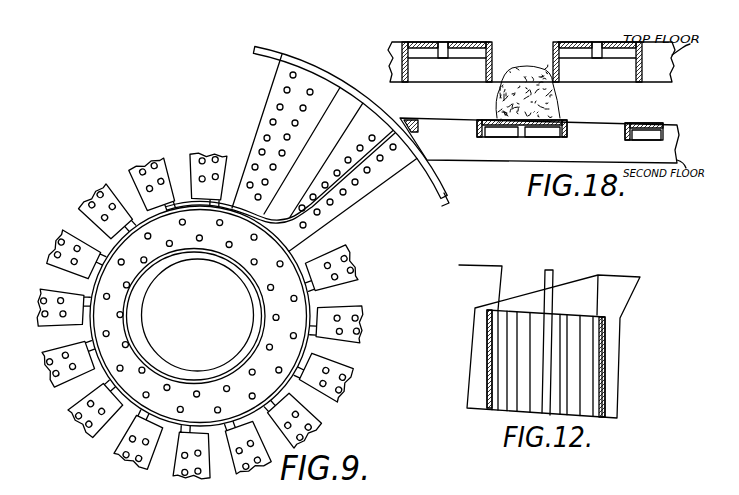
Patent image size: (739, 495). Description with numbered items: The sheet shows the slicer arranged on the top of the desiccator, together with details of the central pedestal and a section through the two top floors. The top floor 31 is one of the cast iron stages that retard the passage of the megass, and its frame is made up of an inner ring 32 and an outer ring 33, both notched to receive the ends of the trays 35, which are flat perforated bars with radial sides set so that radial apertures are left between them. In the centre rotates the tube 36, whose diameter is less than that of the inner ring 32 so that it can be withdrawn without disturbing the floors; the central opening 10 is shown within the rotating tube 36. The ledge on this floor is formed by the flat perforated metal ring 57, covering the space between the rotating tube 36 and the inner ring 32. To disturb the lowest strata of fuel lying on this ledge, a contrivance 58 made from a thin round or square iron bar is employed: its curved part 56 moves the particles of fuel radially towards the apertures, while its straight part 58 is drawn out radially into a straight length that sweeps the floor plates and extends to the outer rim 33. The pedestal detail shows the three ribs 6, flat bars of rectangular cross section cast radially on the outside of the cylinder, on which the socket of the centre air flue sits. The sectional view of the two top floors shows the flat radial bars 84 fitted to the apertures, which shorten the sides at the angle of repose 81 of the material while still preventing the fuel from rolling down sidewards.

In FIG. 12, the ribs 6 is at (643, 350).
In FIG. 9, the central shaft opening 10 is at (150, 309).
In FIG. 18, the floors 31 is at (508, 45).
In FIG. 9, the inner ring 32 is at (90, 288).
In FIG. 9, the outer ring 33 is at (272, 57).
In FIG. 18, the trays 35 is at (595, 50).
In FIG. 9, the rotating tube 36 is at (248, 361).
In FIG. 9, the curved part 56 is at (130, 253).
In FIG. 9, the perforated metal ring 57 is at (117, 357).
In FIG. 9, the contrivance 58 is at (357, 168).
In FIG. 18, the angle of repose 81 is at (493, 119).
In FIG. 18, the flat radial bars 84 is at (636, 78).